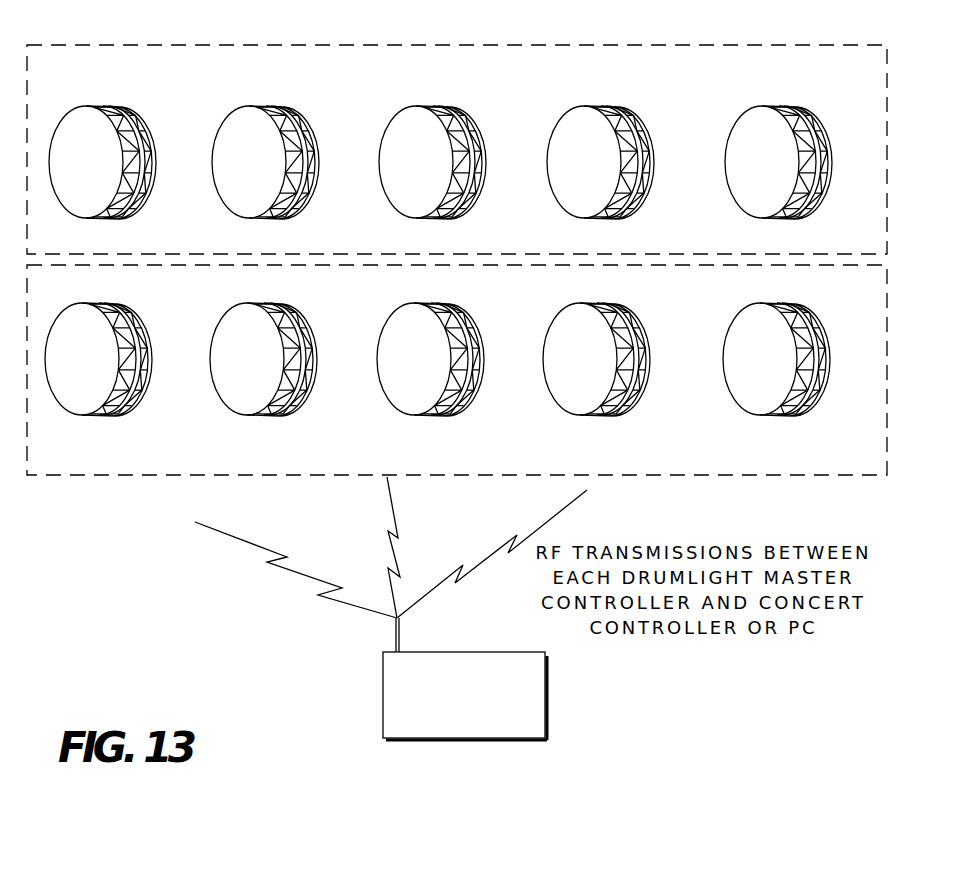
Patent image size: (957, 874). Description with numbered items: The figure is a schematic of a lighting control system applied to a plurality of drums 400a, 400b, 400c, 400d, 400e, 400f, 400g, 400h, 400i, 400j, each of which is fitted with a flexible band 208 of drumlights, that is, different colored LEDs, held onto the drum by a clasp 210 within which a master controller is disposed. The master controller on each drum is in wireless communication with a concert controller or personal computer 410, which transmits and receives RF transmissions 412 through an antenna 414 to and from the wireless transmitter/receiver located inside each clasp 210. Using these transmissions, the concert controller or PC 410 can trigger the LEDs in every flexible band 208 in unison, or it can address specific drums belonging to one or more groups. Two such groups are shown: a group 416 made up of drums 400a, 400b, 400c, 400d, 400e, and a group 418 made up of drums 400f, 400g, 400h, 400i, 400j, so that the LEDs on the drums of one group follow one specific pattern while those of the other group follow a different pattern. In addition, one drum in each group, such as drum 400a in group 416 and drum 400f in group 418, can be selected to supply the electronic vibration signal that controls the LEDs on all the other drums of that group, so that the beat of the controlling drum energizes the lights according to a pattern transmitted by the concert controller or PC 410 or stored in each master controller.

The drum 400a is at (80, 113).
The drum 400b is at (240, 113).
The drum 400c is at (397, 120).
The drum 400d is at (565, 117).
The drum 400e is at (742, 122).
The drum 400f is at (63, 317).
The drum 400g is at (225, 318).
The drum 400h is at (387, 322).
The drum 400i is at (555, 323).
The drum 400j is at (740, 323).
The clasp 210 is at (142, 153).
The flexible band 208 is at (136, 208).
The group 416 is at (478, 83).
The group 418 is at (467, 293).
The concert controller or personal computer 410 is at (383, 672).
The RF transmissions 412 is at (242, 538).
The antenna 414 is at (399, 631).